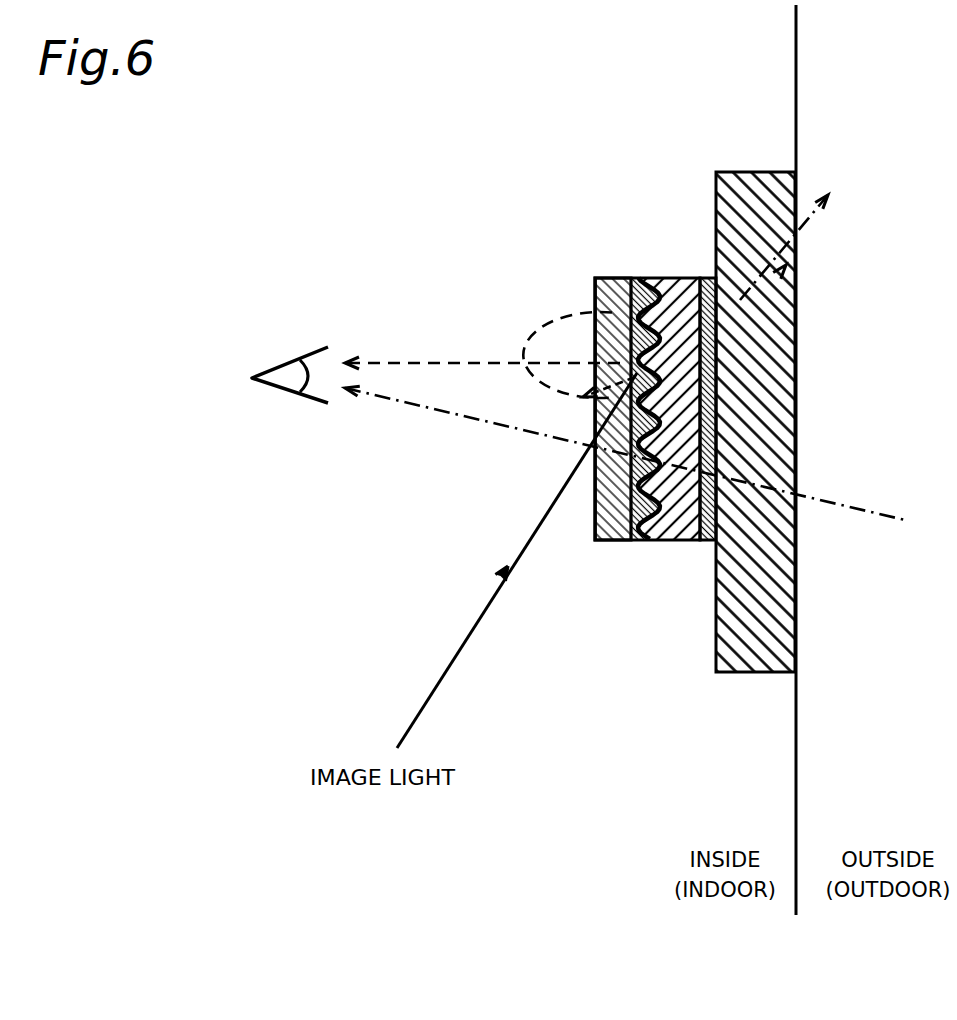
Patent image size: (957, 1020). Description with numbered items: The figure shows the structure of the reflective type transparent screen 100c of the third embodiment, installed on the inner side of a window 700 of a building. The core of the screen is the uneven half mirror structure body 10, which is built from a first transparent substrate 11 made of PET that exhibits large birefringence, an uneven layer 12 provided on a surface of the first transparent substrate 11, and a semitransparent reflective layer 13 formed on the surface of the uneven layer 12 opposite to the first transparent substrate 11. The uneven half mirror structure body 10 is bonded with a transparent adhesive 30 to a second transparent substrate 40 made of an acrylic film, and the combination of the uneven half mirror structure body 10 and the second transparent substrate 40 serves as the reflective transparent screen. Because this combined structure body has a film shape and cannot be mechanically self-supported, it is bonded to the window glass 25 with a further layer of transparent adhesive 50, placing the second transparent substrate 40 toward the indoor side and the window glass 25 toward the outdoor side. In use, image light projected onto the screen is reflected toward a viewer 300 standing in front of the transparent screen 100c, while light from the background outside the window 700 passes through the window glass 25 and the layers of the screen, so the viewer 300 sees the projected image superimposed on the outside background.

The reflective type transparent screen 100c is at (580, 118).
The uneven half mirror structure body 10 is at (631, 432).
The first transparent substrate 11 is at (687, 542).
The uneven layer 12 is at (653, 542).
The semitransparent reflective layer 13 is at (642, 542).
The window glass 25 is at (757, 172).
The transparent adhesive 30 is at (600, 542).
The second transparent substrate 40 is at (612, 278).
The transparent adhesive 50 is at (708, 542).
The viewer 300 is at (245, 362).
The window 700 is at (797, 105).